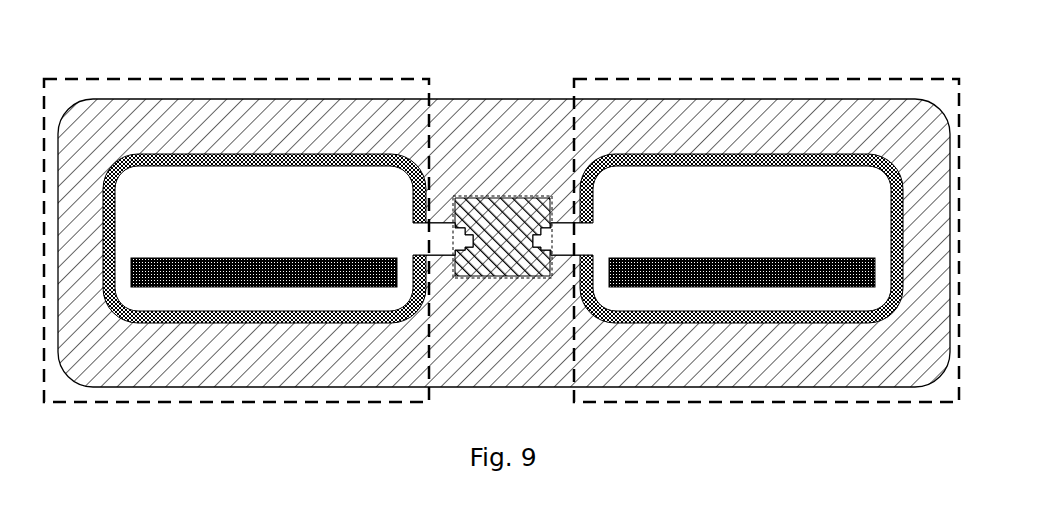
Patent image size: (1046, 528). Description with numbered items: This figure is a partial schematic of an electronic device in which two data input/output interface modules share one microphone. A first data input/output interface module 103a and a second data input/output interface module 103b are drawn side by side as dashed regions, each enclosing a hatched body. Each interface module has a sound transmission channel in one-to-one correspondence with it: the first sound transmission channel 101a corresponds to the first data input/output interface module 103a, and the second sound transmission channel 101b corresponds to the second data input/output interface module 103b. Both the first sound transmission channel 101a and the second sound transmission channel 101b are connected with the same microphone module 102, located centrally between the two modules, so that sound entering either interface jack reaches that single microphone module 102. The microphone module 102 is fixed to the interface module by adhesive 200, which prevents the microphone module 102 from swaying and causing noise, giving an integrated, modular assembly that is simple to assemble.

The first sound transmission channel 101a is at (447, 240).
The second sound transmission channel 101b is at (563, 240).
The microphone module 102 is at (481, 262).
The adhesive 200 is at (503, 239).
The first data input/output interface module 103a is at (130, 79).
The second data input/output interface module 103b is at (768, 78).